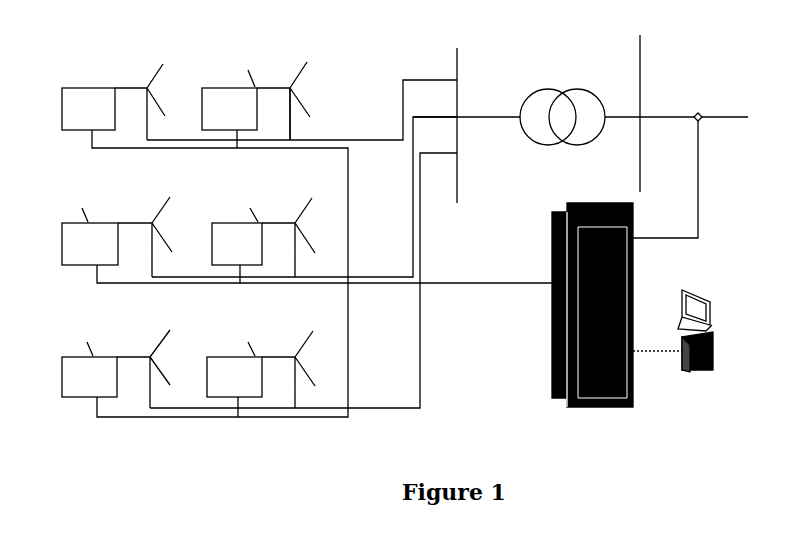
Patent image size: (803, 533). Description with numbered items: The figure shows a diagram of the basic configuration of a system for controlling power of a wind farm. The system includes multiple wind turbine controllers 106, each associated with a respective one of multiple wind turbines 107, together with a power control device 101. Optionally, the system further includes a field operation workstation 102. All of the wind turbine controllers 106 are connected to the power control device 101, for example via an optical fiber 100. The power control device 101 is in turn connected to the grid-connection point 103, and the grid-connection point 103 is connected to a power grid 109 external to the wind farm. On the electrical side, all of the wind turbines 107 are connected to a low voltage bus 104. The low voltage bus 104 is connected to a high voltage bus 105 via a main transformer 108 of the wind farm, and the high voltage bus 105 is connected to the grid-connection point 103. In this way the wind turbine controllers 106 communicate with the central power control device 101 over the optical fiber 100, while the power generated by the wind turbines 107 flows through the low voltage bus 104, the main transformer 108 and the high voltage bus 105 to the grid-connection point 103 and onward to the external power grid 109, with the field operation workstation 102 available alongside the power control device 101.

The optical fiber 100 is at (372, 285).
The power control device 101 is at (602, 408).
The field operation workstation 102 is at (697, 373).
The grid-connection point 103 is at (698, 100).
The low voltage bus 104 is at (455, 66).
The high voltage bus 105 is at (642, 65).
The wind turbine controller 106 is at (92, 86).
The wind turbine 107 is at (163, 64).
The main transformer 108 is at (509, 106).
The power grid 109 is at (692, 120).